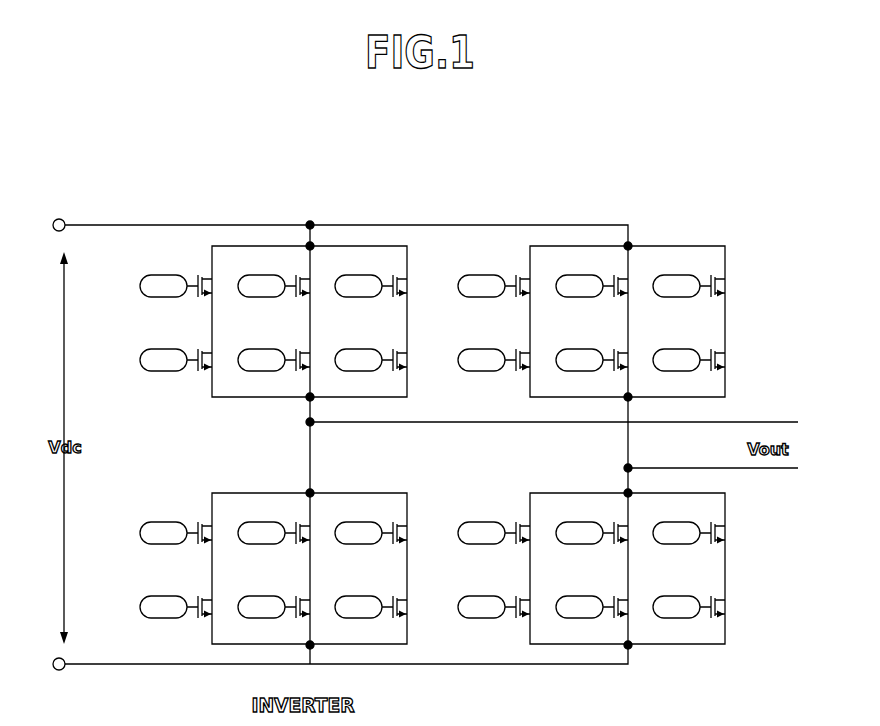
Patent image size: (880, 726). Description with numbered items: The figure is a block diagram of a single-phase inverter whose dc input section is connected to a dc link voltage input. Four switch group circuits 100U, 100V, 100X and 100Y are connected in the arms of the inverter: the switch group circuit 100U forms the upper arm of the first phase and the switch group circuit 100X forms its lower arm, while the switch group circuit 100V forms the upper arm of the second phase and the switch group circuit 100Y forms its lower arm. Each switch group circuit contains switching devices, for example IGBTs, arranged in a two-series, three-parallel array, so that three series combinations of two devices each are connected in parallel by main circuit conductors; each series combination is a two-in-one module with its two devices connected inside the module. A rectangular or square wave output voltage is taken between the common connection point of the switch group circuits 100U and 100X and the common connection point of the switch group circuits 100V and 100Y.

The switch group circuit 100U is at (236, 238).
The switch group circuit 100V is at (657, 232).
The switch group circuit 100X is at (216, 486).
The switch group circuit 100Y is at (708, 490).